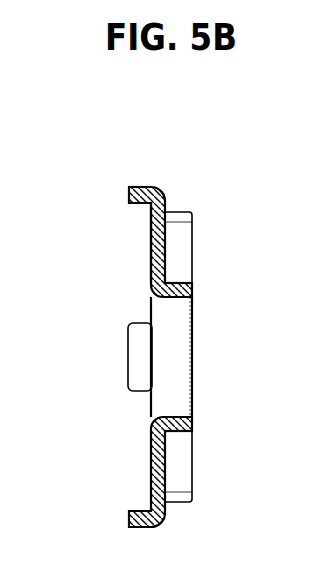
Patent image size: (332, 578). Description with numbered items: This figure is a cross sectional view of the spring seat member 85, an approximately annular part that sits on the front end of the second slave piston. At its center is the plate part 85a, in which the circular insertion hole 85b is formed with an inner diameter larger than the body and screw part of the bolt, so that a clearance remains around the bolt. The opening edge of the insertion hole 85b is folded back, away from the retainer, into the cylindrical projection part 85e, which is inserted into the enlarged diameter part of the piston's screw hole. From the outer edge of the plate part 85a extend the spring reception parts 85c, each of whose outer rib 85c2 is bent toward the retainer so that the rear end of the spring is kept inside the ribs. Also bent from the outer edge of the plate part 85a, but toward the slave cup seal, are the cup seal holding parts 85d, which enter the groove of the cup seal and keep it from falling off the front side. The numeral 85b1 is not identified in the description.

The spring seat member 85 is at (194, 146).
The plate part 85a is at (150, 262).
The insertion hole 85b is at (192, 410).
The inner surface of wall portion 85b1 is at (150, 228).
The spring reception part 85c is at (128, 192).
The outer rib 85c2 is at (138, 186).
The cup seal holding part 85d is at (182, 213).
The projection part 85e is at (192, 295).